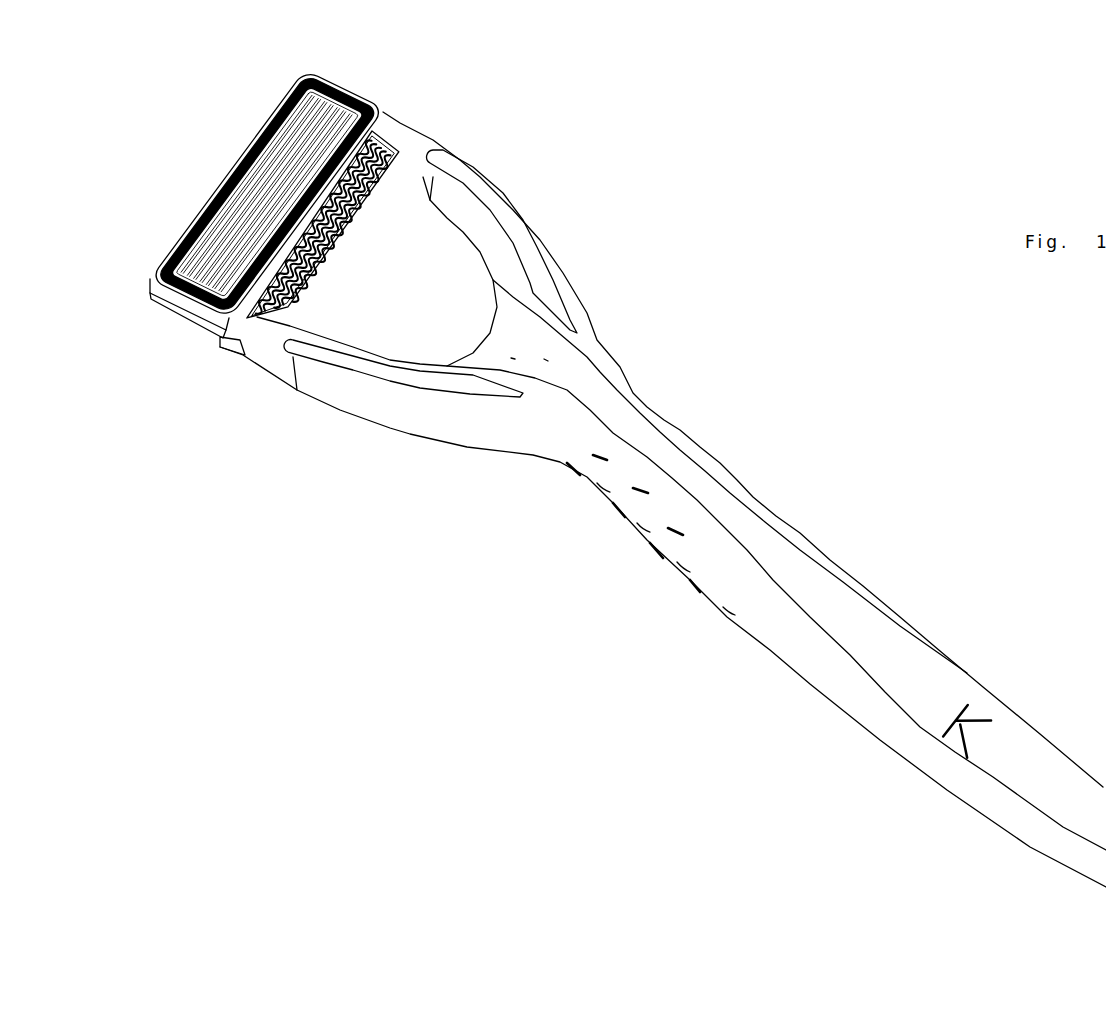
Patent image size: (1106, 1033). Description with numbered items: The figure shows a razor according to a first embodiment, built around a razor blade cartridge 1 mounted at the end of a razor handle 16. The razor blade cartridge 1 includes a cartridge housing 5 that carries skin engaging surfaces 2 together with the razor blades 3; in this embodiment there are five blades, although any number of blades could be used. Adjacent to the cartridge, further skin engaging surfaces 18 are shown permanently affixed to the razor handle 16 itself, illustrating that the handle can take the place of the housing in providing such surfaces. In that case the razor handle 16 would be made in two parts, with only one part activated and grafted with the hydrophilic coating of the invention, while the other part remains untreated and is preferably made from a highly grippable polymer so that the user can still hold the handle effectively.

The razor blade cartridge 1 is at (222, 140).
The skin engaging surfaces 2 is at (303, 143).
The razor blades 3 is at (380, 117).
The cartridge housing 5 is at (183, 307).
The razor handle 16 is at (652, 404).
The skin engaging surfaces 18 is at (380, 187).